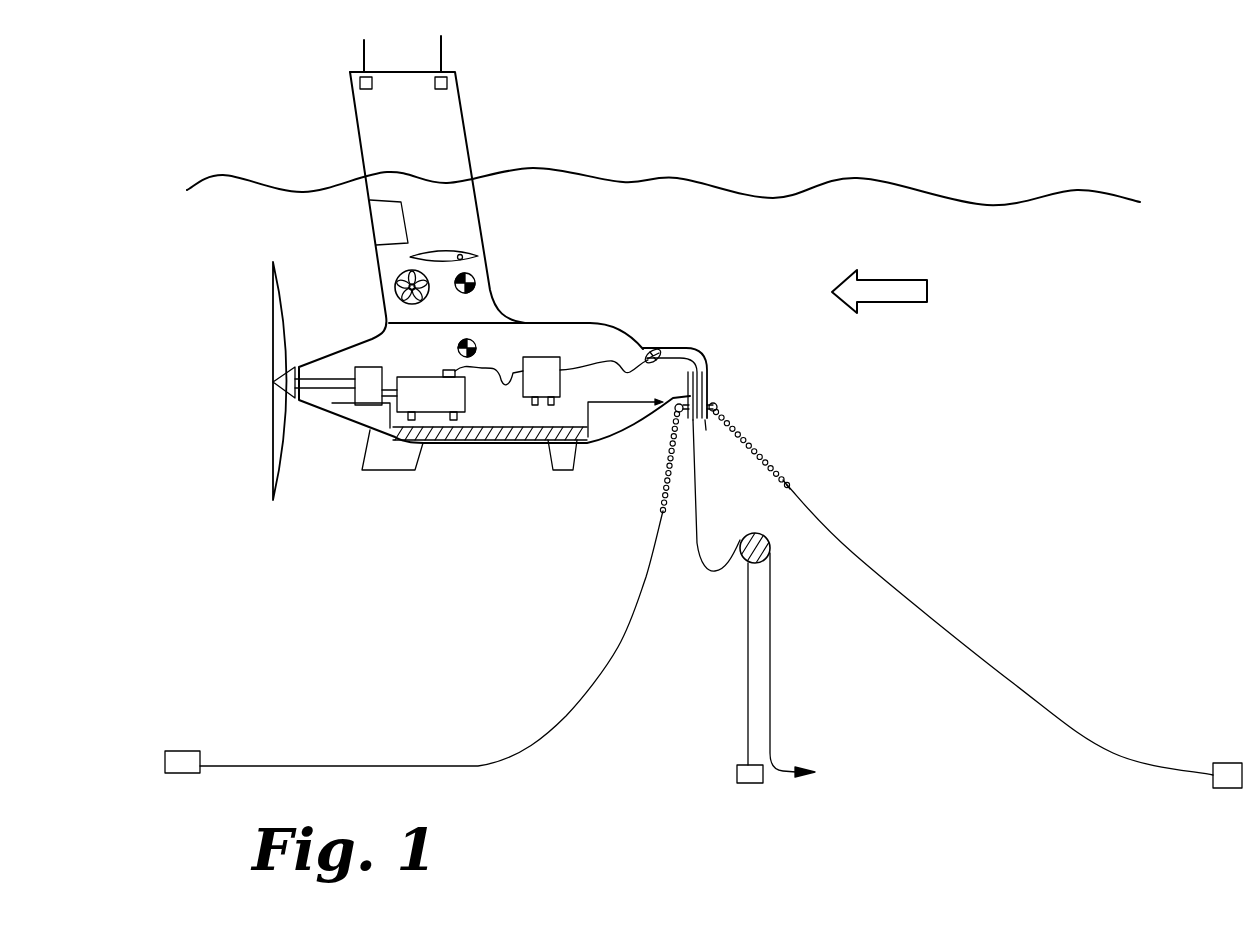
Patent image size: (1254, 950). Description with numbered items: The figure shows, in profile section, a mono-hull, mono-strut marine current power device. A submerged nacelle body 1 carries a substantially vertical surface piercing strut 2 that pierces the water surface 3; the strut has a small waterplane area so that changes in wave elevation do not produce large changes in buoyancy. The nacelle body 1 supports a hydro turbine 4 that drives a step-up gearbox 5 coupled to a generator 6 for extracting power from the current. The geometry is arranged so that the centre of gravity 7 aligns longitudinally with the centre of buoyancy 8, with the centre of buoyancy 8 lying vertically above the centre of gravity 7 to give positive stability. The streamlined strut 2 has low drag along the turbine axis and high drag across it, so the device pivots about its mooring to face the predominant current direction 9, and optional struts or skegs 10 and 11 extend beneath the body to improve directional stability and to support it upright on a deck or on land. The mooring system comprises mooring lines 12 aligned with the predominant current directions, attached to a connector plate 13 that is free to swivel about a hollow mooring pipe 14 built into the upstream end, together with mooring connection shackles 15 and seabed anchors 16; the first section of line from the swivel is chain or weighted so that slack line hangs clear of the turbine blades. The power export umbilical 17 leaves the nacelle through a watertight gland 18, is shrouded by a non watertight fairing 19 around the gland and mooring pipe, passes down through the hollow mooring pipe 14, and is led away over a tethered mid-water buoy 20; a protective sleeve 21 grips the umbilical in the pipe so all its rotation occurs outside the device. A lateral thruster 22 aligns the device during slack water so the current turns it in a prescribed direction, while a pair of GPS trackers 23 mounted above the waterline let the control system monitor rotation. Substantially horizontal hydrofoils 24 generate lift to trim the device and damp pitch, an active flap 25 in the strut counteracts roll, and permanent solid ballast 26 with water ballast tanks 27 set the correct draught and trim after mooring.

The submerged nacelle body 1 is at (562, 321).
The surface piercing strut 2 is at (491, 262).
The water surface 3 is at (648, 180).
The hydro turbine 4 is at (266, 463).
The step-up gearbox 5 is at (355, 368).
The generator 6 is at (420, 377).
The centre of gravity 7 is at (478, 346).
The centre of buoyancy 8 is at (477, 283).
The predominant current direction 9 is at (900, 287).
The strut or skeg 10 is at (390, 470).
The strut or skeg 11 is at (560, 470).
The mooring line 12 is at (606, 669).
The connector plate 13 is at (718, 405).
The hollow mooring pipe 14 is at (705, 378).
The mooring connection shackle 15 is at (787, 484).
The seabed anchor 16 is at (179, 750).
The power export umbilical 17 is at (703, 573).
The watertight gland 18 is at (653, 350).
The non watertight fairing 19 is at (690, 348).
The tethered mid-water buoy 20 is at (748, 645).
The protective sleeve 21 is at (705, 430).
The lateral thruster 22 is at (395, 287).
The GPS tracker 23 is at (360, 83).
The hydrofoil 24 is at (455, 250).
The active flap 25 is at (372, 222).
The permanent solid ballast 26 is at (485, 441).
The ballast tank 27 is at (360, 412).